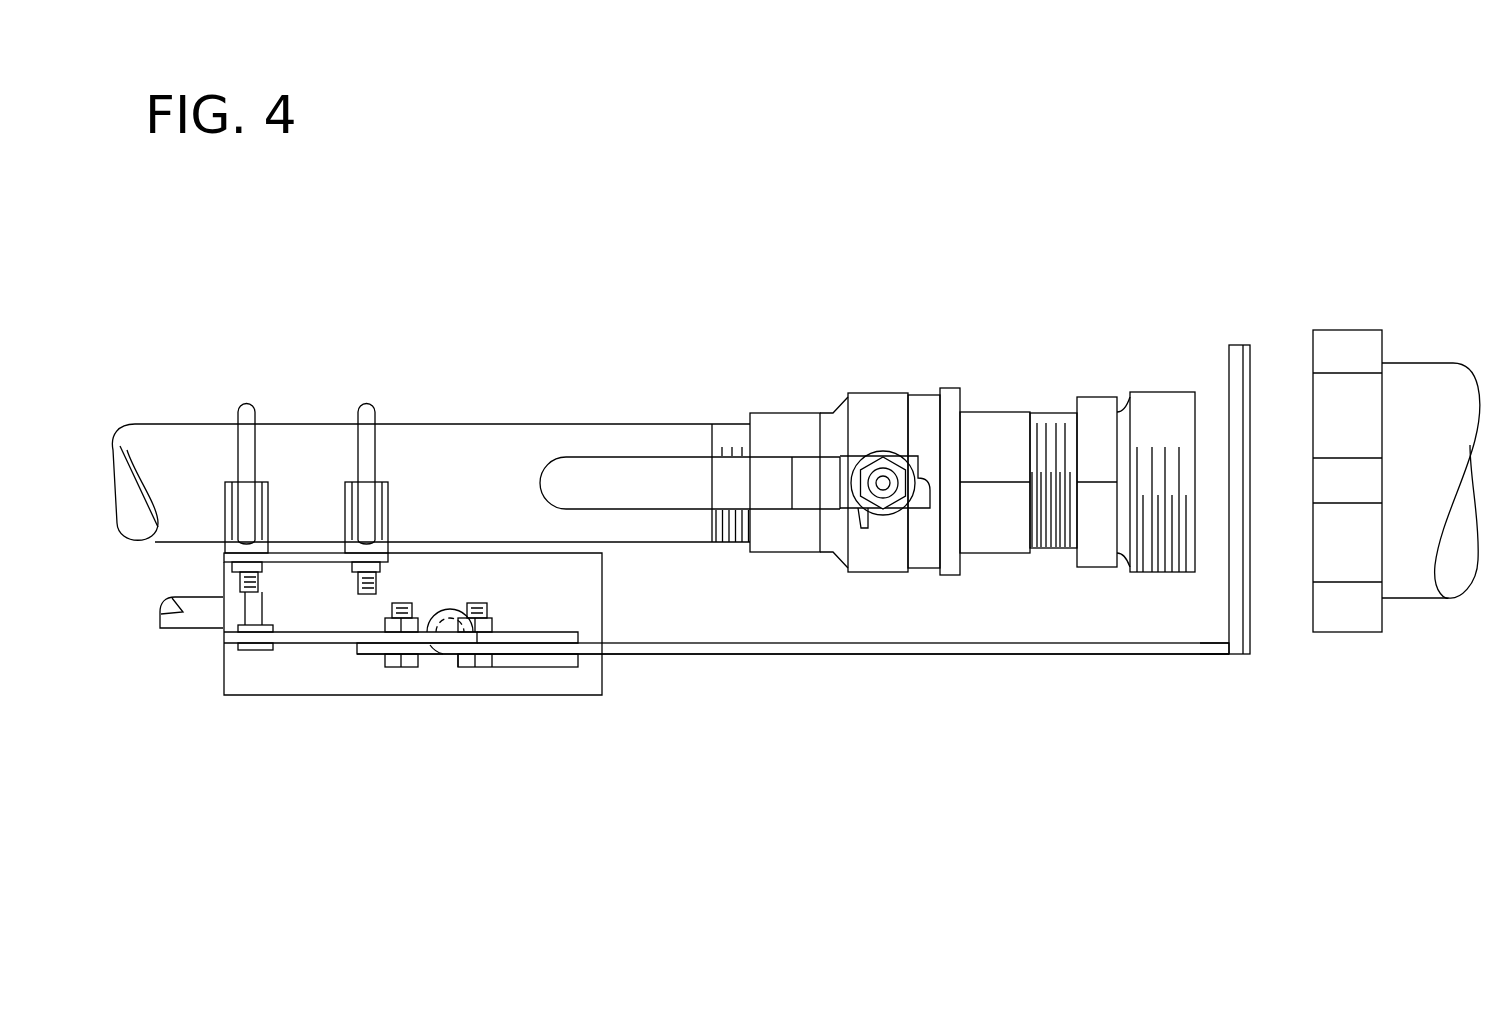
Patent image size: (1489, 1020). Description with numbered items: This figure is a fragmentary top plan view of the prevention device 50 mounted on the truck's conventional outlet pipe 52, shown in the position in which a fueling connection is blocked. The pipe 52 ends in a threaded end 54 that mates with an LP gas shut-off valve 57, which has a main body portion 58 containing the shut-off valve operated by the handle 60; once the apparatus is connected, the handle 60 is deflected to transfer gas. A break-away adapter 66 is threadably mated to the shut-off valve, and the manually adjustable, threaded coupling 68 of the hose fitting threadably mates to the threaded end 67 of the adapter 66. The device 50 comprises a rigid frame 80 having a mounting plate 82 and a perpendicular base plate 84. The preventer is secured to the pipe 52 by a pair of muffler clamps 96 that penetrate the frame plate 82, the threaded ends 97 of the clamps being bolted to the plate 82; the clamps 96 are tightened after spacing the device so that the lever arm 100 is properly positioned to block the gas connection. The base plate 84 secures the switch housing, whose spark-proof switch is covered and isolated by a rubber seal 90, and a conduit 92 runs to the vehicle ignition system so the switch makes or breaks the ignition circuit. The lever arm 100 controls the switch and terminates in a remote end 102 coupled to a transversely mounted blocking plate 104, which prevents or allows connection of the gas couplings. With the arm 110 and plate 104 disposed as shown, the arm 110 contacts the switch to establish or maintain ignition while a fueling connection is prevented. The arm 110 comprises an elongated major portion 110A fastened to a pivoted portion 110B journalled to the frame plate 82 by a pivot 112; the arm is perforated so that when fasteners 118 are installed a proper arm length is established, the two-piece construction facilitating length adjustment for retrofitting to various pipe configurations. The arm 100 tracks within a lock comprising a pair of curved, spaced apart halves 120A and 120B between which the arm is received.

The prevention device 50 is at (682, 371).
The outlet pipe 52 is at (477, 445).
The threaded end 54 is at (733, 428).
The LP gas shut-off valve 57 is at (890, 413).
The main body portion 58 is at (928, 548).
The handle 60 is at (655, 475).
The break-away adapter 66 is at (1059, 393).
The threaded end 67 is at (1172, 398).
The threaded coupling 68 is at (1348, 340).
The rigid frame 80 is at (320, 400).
The mounting plate 82 is at (317, 560).
The base plate 84 is at (573, 683).
The rubber seal 90 is at (447, 667).
The conduit 92 is at (190, 625).
The muffler clamps 96 is at (243, 412).
The threaded ends 97 is at (238, 588).
The lever arm 100 is at (1003, 667).
The remote end 102 is at (1203, 663).
The blocking plate 104 is at (1238, 345).
The lever arm 110 is at (726, 724).
The major portion 110A is at (700, 652).
The pivoted portion 110B is at (317, 643).
The pivot 112 is at (262, 622).
The fasteners 118 is at (402, 688).
The lock half 120A is at (537, 637).
The lock half 120B is at (527, 667).